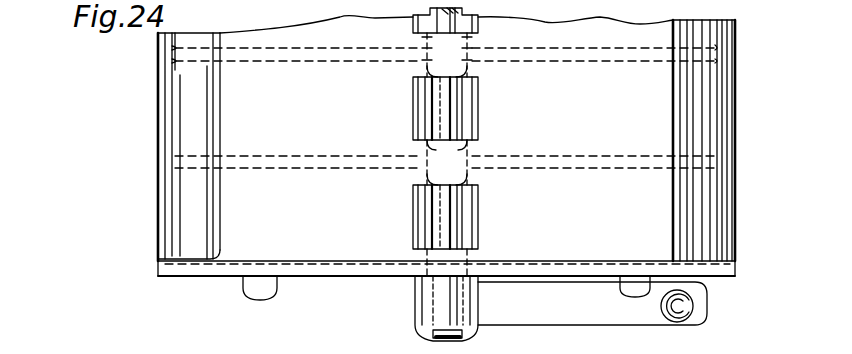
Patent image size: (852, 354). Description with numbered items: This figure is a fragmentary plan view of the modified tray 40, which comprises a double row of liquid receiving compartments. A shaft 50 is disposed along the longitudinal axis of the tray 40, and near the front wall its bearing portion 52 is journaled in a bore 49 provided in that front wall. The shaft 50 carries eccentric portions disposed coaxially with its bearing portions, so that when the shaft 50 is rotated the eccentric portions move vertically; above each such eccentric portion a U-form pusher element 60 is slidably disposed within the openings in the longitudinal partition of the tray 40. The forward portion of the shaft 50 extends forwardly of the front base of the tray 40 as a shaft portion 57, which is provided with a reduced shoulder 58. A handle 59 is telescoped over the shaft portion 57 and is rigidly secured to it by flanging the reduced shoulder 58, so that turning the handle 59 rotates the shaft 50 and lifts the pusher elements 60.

The tray 40 is at (737, 215).
The bore 49 is at (467, 259).
The shaft 50 is at (428, 111).
The pusher element 60 is at (470, 108).
The bearing portion 52 is at (427, 259).
The shaft portion 57 is at (437, 291).
The reduced shoulder 58 is at (462, 339).
The handle 59 is at (635, 321).